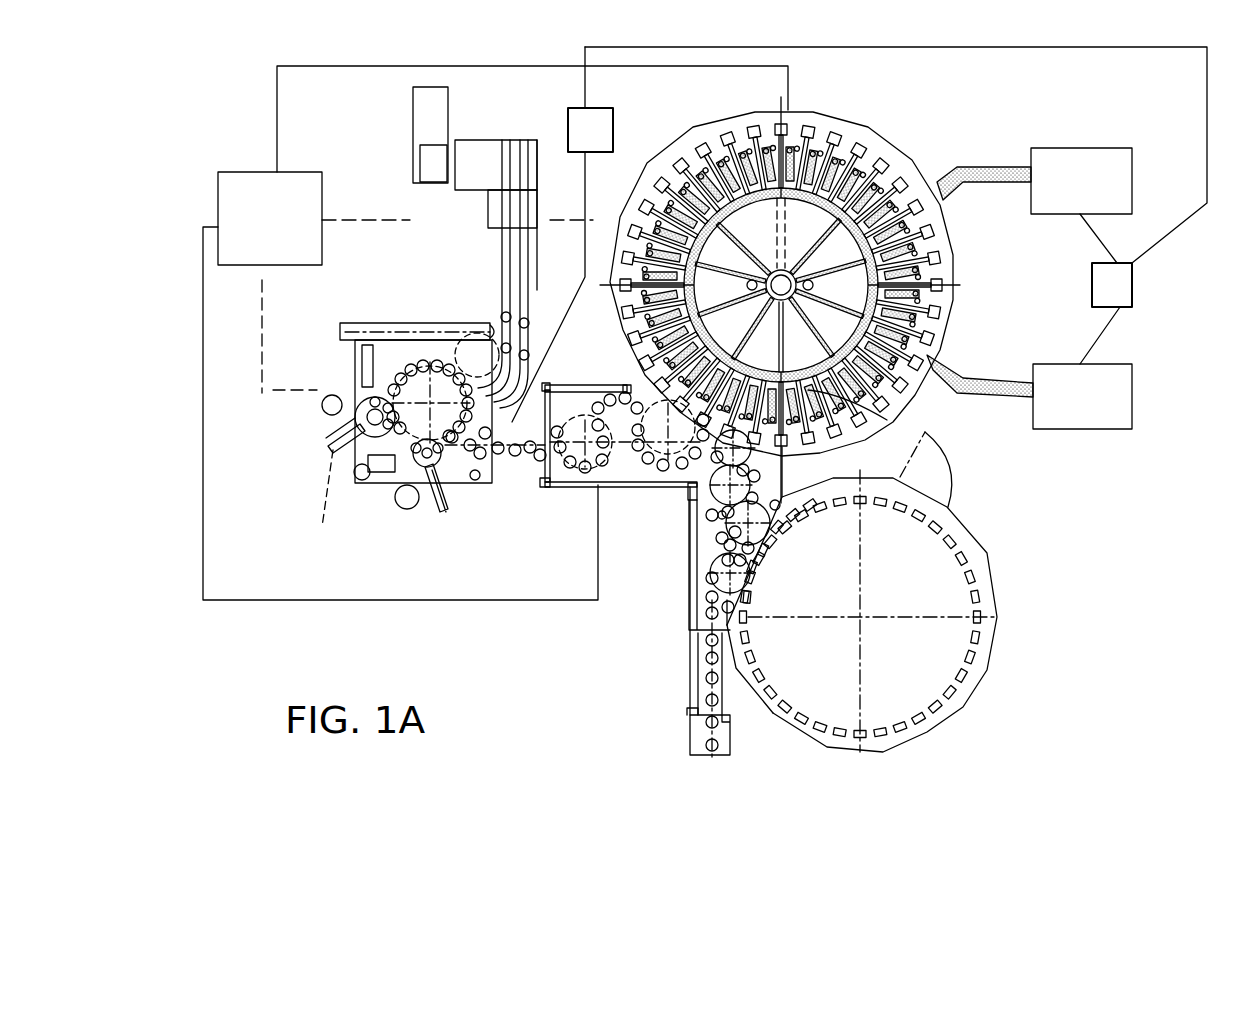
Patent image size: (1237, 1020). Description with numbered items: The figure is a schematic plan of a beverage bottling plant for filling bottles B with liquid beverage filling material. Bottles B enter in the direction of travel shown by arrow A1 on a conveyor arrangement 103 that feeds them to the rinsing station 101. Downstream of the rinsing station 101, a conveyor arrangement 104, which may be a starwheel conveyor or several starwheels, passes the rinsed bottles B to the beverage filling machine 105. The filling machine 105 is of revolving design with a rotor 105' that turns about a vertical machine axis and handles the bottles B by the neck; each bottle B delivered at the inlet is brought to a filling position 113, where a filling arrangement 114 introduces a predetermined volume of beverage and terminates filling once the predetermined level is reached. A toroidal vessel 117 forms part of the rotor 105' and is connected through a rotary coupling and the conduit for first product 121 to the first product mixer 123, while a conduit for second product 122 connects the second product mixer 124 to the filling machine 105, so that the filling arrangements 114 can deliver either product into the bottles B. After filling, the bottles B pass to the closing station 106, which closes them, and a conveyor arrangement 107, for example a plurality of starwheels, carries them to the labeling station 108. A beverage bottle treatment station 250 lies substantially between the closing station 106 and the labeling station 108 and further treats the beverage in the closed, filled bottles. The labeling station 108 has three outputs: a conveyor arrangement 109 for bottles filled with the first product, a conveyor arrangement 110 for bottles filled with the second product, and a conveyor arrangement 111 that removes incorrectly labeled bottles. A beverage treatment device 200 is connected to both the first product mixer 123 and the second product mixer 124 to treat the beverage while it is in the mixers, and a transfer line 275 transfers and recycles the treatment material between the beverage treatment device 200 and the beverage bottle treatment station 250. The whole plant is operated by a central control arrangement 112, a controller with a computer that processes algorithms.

The rinsing station 101 is at (1010, 527).
The conveyor arrangement to feed bottles to rinsing arrangement 103 is at (723, 688).
The conveyor arrangement to pass bottles to filling machine 104 is at (702, 545).
The beverage filling machine 105 is at (833, 300).
The rotor 105' is at (781, 270).
The closing station 106 is at (631, 436).
The conveyor arrangement to pass bottles to labeling arrangement 107 is at (553, 495).
The labeling station 108 is at (383, 524).
The conveyor arrangement to convey first product bottles 109 is at (525, 310).
The conveyor arrangement to convey second product bottles 110 is at (502, 257).
The conveyor arrangement to convey incorrectly labeled bottles 111 is at (388, 325).
The central control arrangement 112 is at (270, 218).
The filling position 113 is at (938, 227).
The filling arrangement 114 is at (940, 308).
The toroidal vessel 117 is at (887, 420).
The conduit for first product 121 is at (982, 168).
The conduit for second product 122 is at (987, 382).
The first product mixer 123 is at (1124, 190).
The second product mixer 124 is at (1135, 403).
The beverage treatment device 200 is at (1130, 288).
The beverage bottle treatment station 250 is at (608, 127).
The transfer line 275 is at (1081, 49).
The direction of travel arrow A1 is at (675, 677).
The bottles B is at (715, 700).